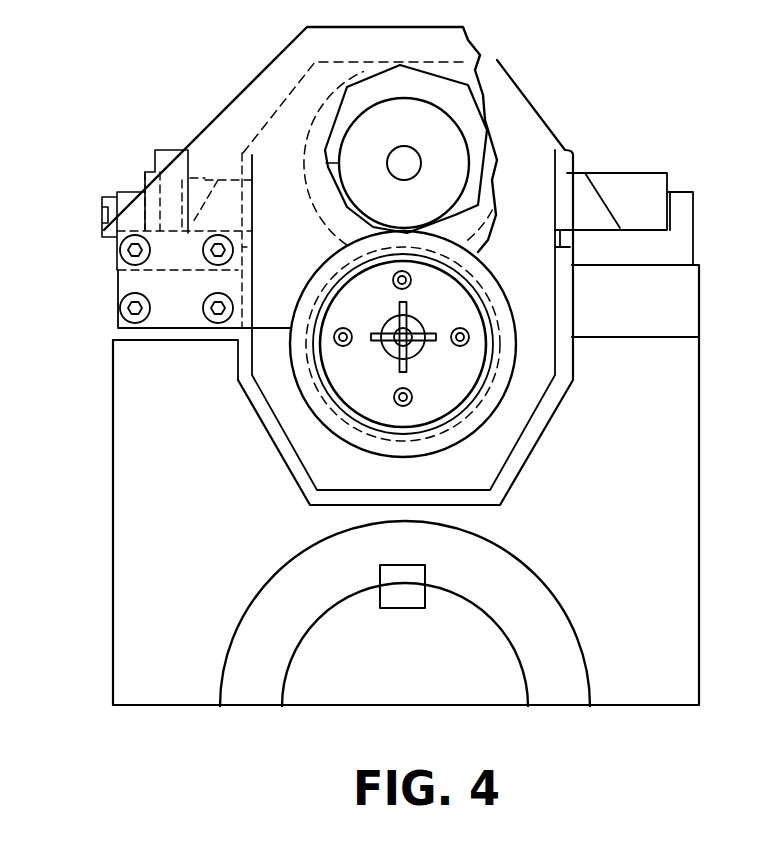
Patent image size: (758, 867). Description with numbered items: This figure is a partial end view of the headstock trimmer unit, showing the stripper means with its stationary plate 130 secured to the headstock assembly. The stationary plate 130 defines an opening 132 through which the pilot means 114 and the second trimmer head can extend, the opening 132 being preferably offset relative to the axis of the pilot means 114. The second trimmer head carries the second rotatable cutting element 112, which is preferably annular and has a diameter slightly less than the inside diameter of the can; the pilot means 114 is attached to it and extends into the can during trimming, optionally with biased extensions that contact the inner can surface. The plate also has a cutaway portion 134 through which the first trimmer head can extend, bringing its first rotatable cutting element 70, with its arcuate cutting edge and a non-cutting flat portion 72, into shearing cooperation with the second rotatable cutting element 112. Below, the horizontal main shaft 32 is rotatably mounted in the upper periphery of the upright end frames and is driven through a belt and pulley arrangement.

The stationary plate 130 is at (272, 88).
The opening 132 is at (440, 92).
The second rotatable cutting element 112 is at (458, 142).
The pilot means 114 is at (432, 213).
The cutaway portion 134 is at (360, 265).
The first rotatable cutting element 70 is at (368, 403).
The flat portion 72 is at (411, 287).
The main shaft 32 is at (490, 683).